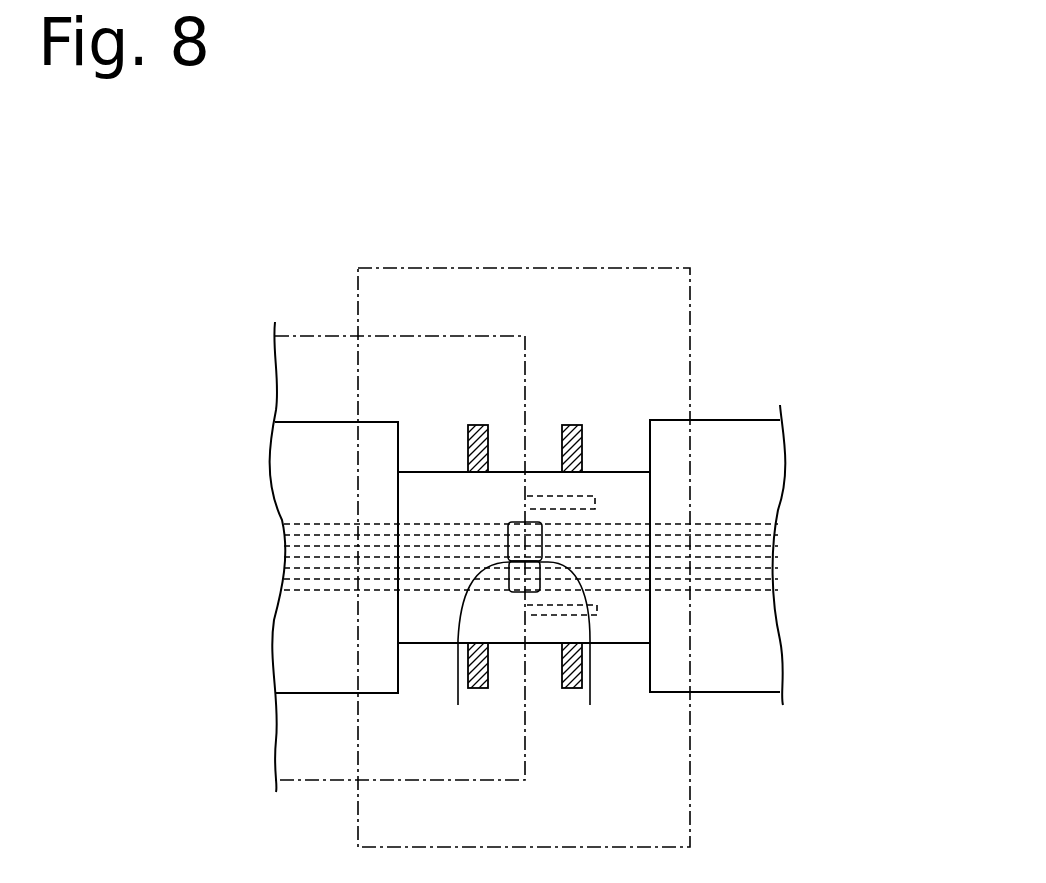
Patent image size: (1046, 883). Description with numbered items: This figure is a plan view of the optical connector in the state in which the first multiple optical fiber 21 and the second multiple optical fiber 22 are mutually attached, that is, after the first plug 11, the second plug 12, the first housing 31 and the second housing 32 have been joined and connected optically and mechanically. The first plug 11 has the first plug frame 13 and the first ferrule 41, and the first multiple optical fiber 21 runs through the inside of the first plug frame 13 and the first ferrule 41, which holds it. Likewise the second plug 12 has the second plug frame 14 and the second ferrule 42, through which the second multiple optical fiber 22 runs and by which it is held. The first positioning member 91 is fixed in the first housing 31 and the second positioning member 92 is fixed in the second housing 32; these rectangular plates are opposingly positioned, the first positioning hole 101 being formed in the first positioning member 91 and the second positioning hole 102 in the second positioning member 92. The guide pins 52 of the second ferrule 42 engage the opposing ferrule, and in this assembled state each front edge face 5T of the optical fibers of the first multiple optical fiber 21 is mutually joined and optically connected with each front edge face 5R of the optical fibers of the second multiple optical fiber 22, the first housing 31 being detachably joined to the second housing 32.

The first plug 11 is at (732, 404).
The second plug 12 is at (331, 404).
The first plug frame 13 is at (757, 419).
The second plug frame 14 is at (292, 421).
The first multiple optical fiber 21 is at (782, 518).
The second multiple optical fiber 22 is at (270, 523).
The first housing 31 is at (588, 267).
The second housing 32 is at (468, 335).
The first ferrule 41 is at (625, 625).
The second ferrule 42 is at (422, 625).
The guide pins 52 is at (573, 506).
The first positioning member 91 is at (572, 424).
The second positioning member 92 is at (478, 424).
The first positioning hole 101 is at (575, 481).
The second positioning hole 102 is at (476, 481).
The front edge faces of the optical fibers of the first multiple optical fiber 5T is at (463, 686).
The front edge faces of the optical fibers of the second multiple optical fiber 5R is at (589, 686).